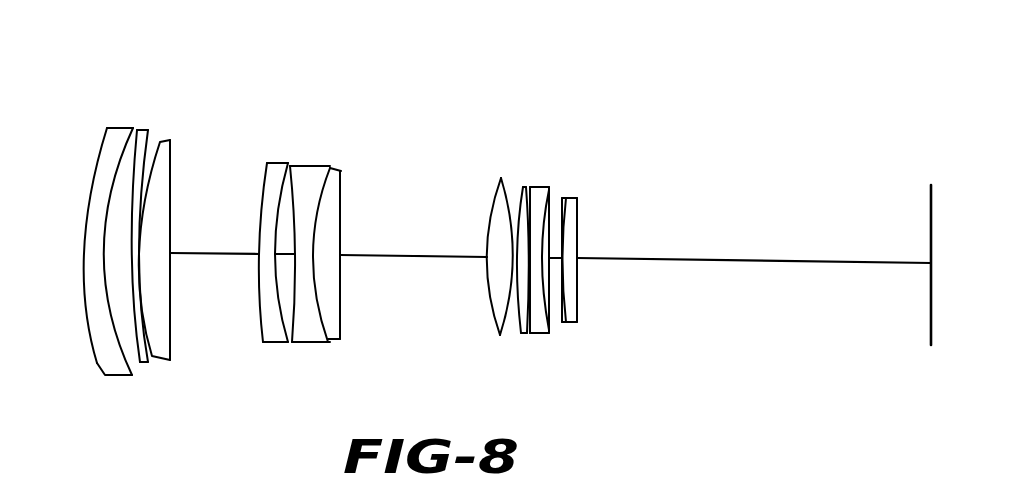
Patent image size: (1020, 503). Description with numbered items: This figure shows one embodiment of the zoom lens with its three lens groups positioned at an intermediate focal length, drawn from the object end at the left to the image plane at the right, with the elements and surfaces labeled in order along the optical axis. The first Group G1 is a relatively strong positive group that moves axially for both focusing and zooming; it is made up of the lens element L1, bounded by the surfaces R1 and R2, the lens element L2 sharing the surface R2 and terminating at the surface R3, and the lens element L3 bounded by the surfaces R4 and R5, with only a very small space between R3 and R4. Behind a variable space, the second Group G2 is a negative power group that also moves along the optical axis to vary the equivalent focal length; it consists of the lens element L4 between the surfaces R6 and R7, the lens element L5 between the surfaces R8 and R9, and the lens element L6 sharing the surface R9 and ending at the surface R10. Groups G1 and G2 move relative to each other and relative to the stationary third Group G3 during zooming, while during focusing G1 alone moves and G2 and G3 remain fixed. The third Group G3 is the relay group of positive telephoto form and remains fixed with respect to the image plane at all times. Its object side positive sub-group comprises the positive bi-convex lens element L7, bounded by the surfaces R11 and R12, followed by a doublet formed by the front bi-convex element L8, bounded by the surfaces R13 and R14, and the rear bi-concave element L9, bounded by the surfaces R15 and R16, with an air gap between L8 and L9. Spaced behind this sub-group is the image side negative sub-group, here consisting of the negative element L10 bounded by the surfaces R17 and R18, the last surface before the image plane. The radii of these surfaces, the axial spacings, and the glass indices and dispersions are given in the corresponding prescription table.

The first Group G1 is at (172, 57).
The second Group G2 is at (338, 88).
The third Group G3 is at (580, 118).
The lens element L1 is at (96, 257).
The lens element L2 is at (167, 257).
The lens element L3 is at (177, 233).
The lens element L4 is at (257, 262).
The lens element L5 is at (336, 258).
The lens element L6 is at (369, 233).
The positive bi-convex lens element L7 is at (475, 259).
The front bi-convex element L8 is at (489, 274).
The rear bi-concave element L9 is at (550, 274).
The negative element L10 is at (604, 279).
The lens surface radius R1 is at (100, 357).
The lens surface radius R2 is at (115, 376).
The lens surface radius R3 is at (138, 375).
The lens surface radius R4 is at (153, 348).
The lens surface radius R5 is at (171, 330).
The lens surface radius R6 is at (262, 318).
The lens surface radius R7 is at (277, 322).
The lens surface radius R8 is at (293, 318).
The lens surface radius R9 is at (330, 318).
The lens surface radius R10 is at (341, 303).
The lens surface radius R11 is at (488, 293).
The lens surface radius R12 is at (503, 303).
The lens surface radius R13 is at (500, 310).
The lens surface radius R14 is at (516, 308).
The lens surface radius R15 is at (530, 328).
The lens surface radius R16 is at (548, 326).
The lens surface radius R17 is at (572, 310).
The lens surface radius R18 is at (578, 305).